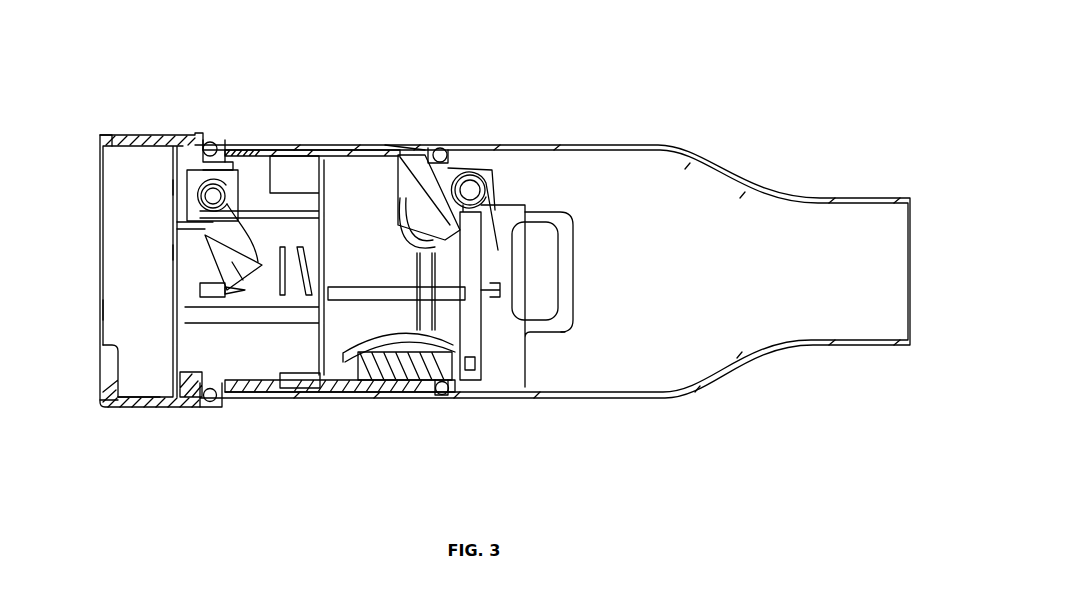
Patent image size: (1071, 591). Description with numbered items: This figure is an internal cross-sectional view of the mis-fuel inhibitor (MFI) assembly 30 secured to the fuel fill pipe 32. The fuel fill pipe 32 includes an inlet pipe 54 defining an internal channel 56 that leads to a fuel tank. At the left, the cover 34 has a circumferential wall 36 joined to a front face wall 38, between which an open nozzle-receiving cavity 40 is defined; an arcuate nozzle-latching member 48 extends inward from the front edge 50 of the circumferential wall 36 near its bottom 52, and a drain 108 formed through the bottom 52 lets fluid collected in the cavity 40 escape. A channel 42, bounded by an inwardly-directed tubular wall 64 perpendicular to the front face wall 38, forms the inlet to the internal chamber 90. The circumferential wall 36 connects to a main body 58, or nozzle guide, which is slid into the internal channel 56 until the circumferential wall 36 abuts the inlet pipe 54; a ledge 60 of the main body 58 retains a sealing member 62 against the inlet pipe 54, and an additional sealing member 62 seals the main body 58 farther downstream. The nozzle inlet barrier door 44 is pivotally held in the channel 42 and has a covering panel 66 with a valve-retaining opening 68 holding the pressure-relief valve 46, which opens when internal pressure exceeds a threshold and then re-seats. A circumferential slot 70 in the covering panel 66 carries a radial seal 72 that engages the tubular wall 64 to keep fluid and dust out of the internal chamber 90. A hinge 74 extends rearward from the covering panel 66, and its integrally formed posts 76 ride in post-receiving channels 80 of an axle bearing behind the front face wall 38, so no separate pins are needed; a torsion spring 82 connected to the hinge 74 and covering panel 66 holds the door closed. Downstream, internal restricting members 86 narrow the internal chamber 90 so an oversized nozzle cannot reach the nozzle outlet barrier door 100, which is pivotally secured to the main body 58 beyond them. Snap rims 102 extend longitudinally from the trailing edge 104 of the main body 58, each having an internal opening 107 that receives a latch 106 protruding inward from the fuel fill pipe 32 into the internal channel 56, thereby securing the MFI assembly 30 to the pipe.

The mis-fuel inhibitor (MFI) assembly 30 is at (120, 84).
The fuel fill pipe 32 is at (703, 153).
The cover 34 is at (182, 133).
The circumferential wall 36 is at (127, 135).
The front face wall 38 is at (175, 186).
The open nozzle-receiving cavity 40 is at (134, 300).
The channel 42 is at (176, 252).
The nozzle inlet barrier door 44 is at (200, 242).
The pressure-relief valve 46 is at (208, 330).
The nozzle-latching member 48 is at (105, 368).
The front edge 50 is at (100, 139).
The bottom 52 is at (118, 408).
The inlet pipe 54 is at (568, 147).
The internal channel 56 is at (627, 203).
The main body 58 is at (235, 172).
The ledge 60 is at (232, 148).
The sealing member 62 is at (207, 142).
The inwardly-directed tubular wall 64 is at (183, 238).
The covering panel 66 is at (210, 333).
The valve-retaining opening 68 is at (230, 287).
The circumferential slot 70 is at (205, 296).
The radial seal 72 is at (200, 262).
The hinge 74 is at (225, 245).
The posts 76 is at (235, 215).
The post-receiving channels 80 is at (157, 135).
The torsion spring 82 is at (215, 262).
The internal restricting members 86 is at (398, 372).
The internal chamber 90 is at (318, 382).
The nozzle outlet barrier door 100 is at (497, 165).
The snap rim 102 is at (543, 217).
The trailing edge 104 is at (518, 368).
The latch 106 is at (543, 258).
The internal opening 107 is at (573, 213).
The drain 108 is at (155, 406).